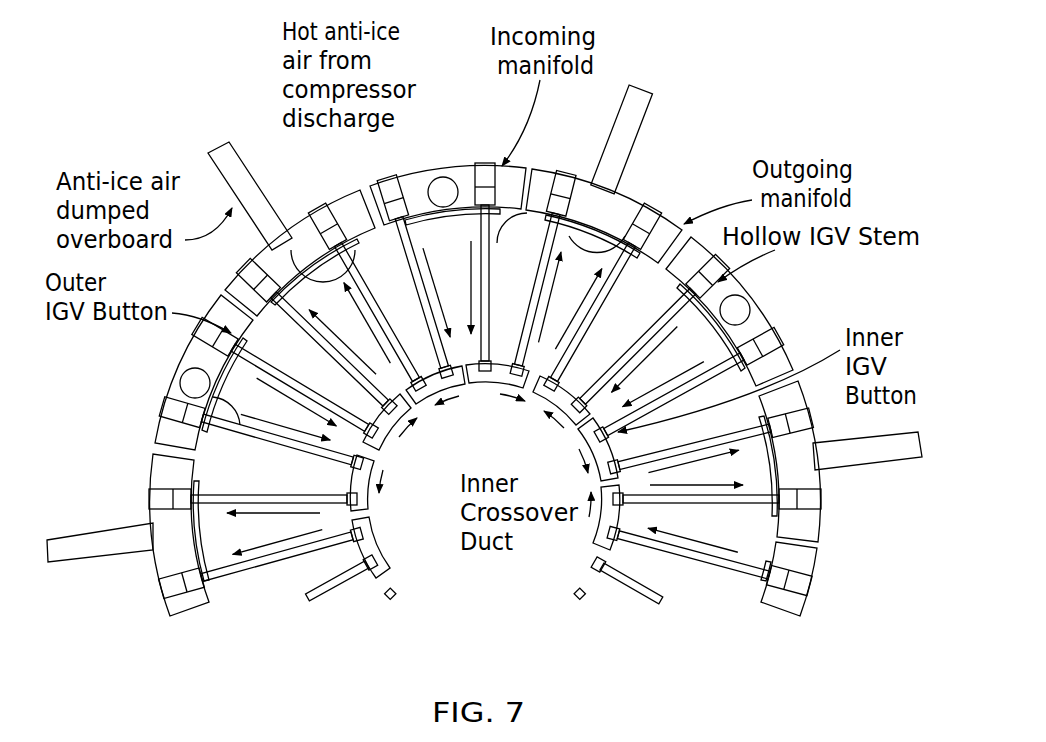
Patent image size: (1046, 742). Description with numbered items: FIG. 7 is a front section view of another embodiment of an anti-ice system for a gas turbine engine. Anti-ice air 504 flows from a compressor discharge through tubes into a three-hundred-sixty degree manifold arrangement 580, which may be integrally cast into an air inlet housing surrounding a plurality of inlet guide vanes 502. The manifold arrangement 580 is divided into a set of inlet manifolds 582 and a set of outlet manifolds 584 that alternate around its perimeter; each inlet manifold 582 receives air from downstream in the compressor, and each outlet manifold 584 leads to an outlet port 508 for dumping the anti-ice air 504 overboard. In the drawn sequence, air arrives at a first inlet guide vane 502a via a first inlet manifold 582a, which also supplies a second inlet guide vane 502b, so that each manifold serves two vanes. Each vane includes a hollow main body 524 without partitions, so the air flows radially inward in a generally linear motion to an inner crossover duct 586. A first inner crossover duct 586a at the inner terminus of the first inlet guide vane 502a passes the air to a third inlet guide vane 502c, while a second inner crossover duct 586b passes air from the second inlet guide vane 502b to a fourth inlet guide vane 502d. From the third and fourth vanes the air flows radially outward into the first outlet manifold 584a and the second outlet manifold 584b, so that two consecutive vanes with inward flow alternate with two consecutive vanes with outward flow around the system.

The inlet guide vanes 502 is at (244, 448).
The first inlet guide vane 502a is at (420, 205).
The second inlet guide vane 502b is at (570, 192).
The third inlet guide vane 502c is at (335, 276).
The fourth inlet guide vane 502d is at (617, 225).
The anti-ice air 504 is at (182, 383).
The outlet port 508 is at (66, 552).
The main body 524 is at (235, 576).
The manifold arrangement 580 is at (828, 550).
The inlet manifolds 582 is at (197, 362).
The first inlet manifold 582a is at (445, 170).
The outlet manifolds 584 is at (170, 560).
The first outlet manifold 584a is at (303, 233).
The second outlet manifold 584b is at (597, 195).
The inner crossover duct 586 is at (372, 556).
The first inner crossover duct 586a is at (470, 378).
The second inner crossover duct 586b is at (490, 396).